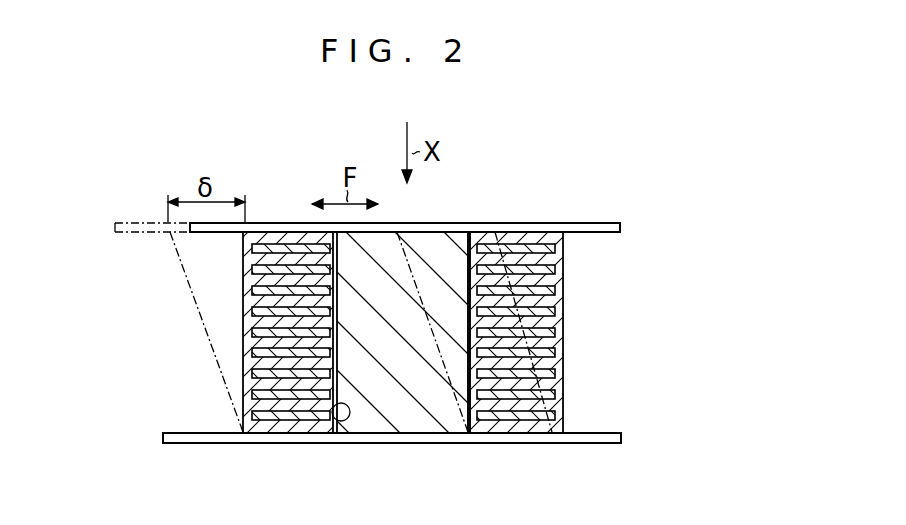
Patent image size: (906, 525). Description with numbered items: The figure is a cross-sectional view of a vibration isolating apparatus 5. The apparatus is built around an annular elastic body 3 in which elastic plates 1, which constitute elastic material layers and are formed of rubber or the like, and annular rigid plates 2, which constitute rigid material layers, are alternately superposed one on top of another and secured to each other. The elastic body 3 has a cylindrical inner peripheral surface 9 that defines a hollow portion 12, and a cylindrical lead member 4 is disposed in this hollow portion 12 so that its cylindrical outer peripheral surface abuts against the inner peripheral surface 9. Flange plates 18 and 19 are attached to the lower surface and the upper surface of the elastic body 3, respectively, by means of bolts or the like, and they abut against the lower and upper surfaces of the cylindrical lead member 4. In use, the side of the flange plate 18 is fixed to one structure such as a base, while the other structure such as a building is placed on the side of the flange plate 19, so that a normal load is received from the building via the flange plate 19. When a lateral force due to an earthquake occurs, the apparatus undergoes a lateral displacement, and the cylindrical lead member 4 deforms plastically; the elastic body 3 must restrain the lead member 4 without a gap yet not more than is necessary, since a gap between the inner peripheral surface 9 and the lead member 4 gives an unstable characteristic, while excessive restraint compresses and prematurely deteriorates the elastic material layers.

The elastic plate 1 is at (543, 343).
The annular rigid plate 2 is at (552, 272).
The annular elastic body 3 is at (243, 302).
The cylindrical lead member 4 is at (423, 238).
The vibration isolating apparatus 5 is at (572, 303).
The cylindrical inner peripheral surface 9 is at (335, 423).
The hollow portion 12 is at (458, 238).
The flange plate 18 is at (602, 445).
The flange plate 19 is at (527, 228).